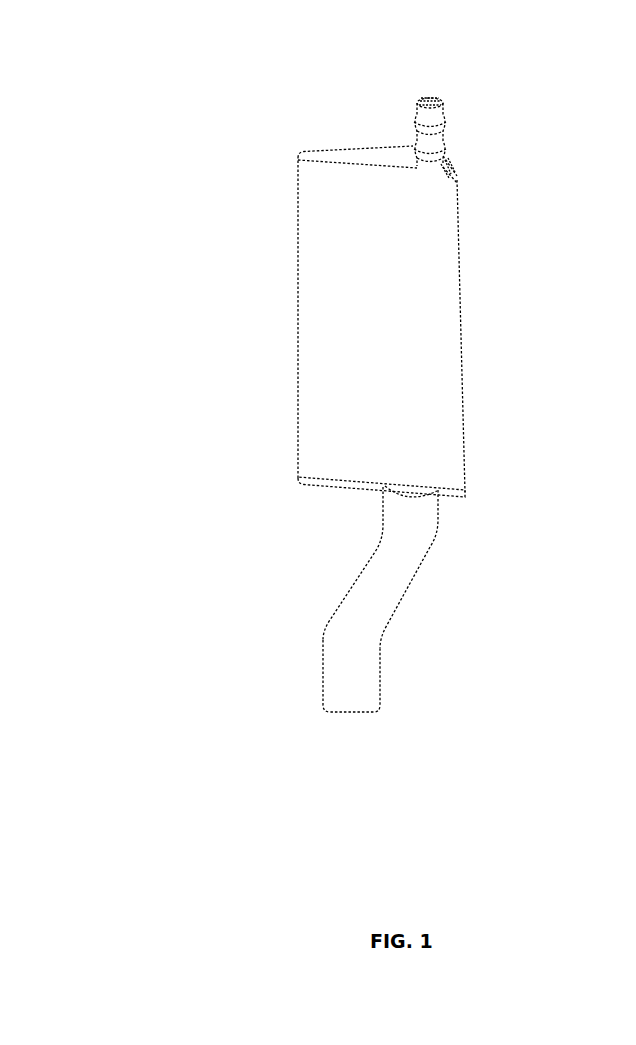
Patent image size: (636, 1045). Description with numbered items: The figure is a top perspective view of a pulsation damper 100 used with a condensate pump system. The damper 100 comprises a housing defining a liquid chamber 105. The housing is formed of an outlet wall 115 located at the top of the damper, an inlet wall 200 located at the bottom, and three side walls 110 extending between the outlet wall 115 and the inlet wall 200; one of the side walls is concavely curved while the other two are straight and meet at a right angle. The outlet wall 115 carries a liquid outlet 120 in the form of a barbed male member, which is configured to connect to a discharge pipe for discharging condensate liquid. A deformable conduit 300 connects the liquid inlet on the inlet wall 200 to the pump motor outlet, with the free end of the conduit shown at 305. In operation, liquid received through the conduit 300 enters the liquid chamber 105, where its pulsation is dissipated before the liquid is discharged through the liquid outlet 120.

The pulsation damper 100 is at (148, 138).
The liquid chamber 105 is at (262, 348).
The side walls 110 is at (320, 401).
The outlet wall 115 is at (387, 152).
The liquid outlet 120 is at (462, 88).
The inlet wall 200 is at (432, 488).
The deformable conduit 300 is at (300, 625).
The tube distal end 305 is at (380, 726).